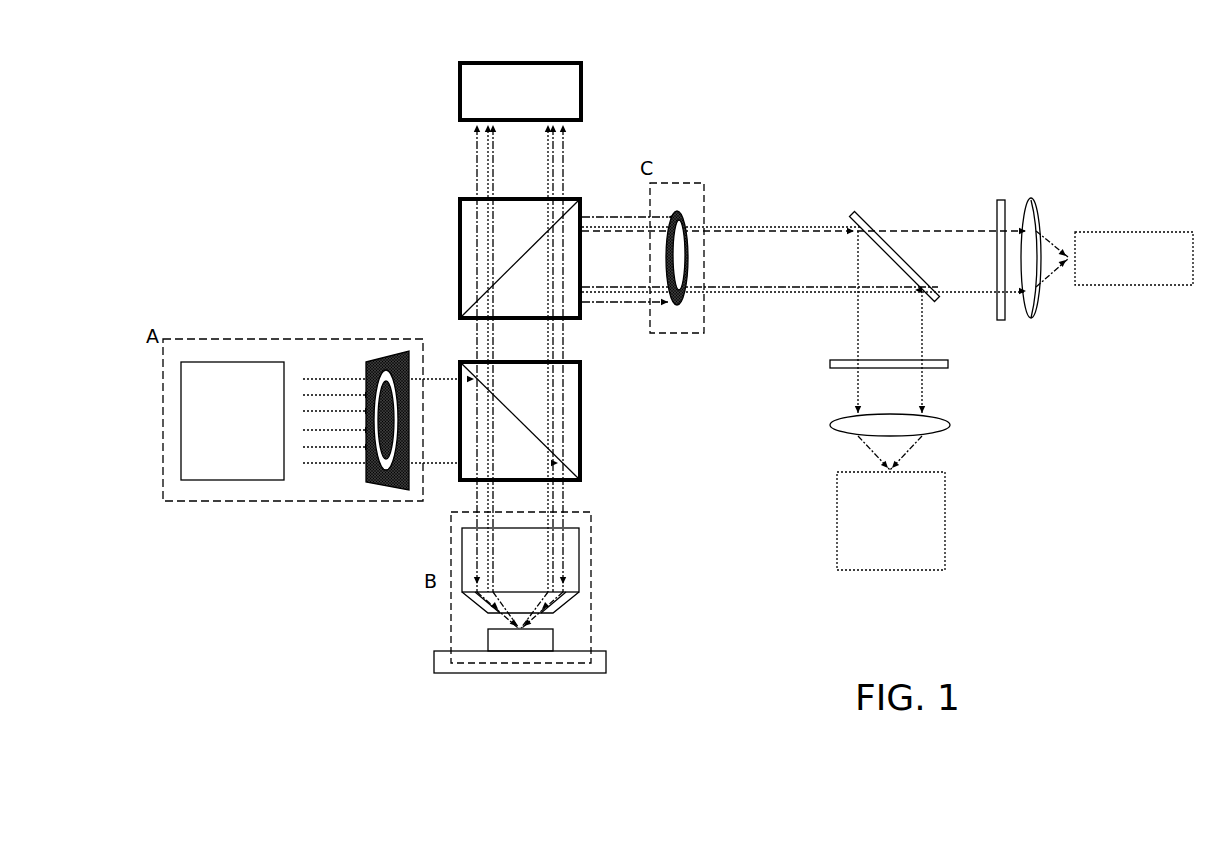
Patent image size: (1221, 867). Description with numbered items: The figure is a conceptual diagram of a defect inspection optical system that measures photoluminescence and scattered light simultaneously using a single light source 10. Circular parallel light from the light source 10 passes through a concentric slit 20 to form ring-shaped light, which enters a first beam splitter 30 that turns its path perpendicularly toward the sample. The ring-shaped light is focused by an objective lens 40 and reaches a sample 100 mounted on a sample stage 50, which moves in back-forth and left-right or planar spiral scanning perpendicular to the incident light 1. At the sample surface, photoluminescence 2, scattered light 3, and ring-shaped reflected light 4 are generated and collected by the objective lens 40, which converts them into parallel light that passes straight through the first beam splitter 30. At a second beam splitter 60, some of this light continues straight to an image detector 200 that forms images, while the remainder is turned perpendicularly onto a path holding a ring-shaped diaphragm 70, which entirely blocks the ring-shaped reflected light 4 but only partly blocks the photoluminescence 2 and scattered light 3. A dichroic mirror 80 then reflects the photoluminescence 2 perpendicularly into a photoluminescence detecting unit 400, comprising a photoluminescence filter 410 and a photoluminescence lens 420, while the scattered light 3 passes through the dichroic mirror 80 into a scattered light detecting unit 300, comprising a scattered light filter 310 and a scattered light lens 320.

The incident light 1 is at (440, 465).
The photoluminescence 2 is at (857, 322).
The scattered light 3 is at (547, 557).
The reflected light 4 is at (607, 302).
The light source 10 is at (203, 470).
The concentric slit 20 is at (388, 357).
The first beam splitter 30 is at (572, 439).
The objective lens 40 is at (573, 547).
The sample stage 50 is at (597, 663).
The second beam splitter 60 is at (472, 262).
The ring-shaped diaphragm 70 is at (668, 218).
The dichroic mirror 80 is at (858, 215).
The sample 100 is at (545, 642).
The image detector 200 is at (530, 75).
The scattered light detecting unit 300 is at (1133, 245).
The scattered light filter 310 is at (1002, 210).
The scattered light lens 320 is at (1033, 307).
The photoluminescence detecting unit 400 is at (932, 533).
The photoluminescence filter 410 is at (948, 364).
The photoluminescence lens 420 is at (930, 428).